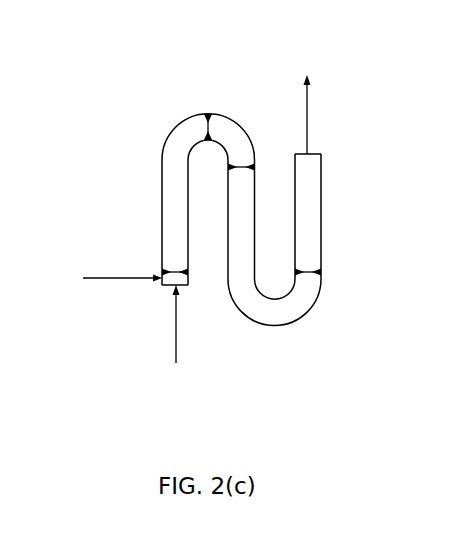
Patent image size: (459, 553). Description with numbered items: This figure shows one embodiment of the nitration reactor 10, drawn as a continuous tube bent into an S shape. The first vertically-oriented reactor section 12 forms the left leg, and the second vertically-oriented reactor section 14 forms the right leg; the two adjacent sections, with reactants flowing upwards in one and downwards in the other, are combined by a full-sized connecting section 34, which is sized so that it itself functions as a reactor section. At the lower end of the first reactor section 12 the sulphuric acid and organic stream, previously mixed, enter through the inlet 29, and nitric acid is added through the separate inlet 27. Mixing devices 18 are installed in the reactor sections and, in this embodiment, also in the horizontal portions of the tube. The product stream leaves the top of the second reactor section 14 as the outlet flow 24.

The nitration reactor 10 is at (216, 60).
The first vertically-oriented reactor section 12 is at (170, 180).
The second vertically-oriented reactor section 14 is at (313, 188).
The mixing devices 18 is at (207, 125).
The outlet stream 24 is at (308, 113).
The inlet for nitric acid 27 is at (122, 278).
The inlet for premixed sulphuric acid and organic stream 29 is at (177, 322).
The full-sized connecting section 34 is at (243, 220).